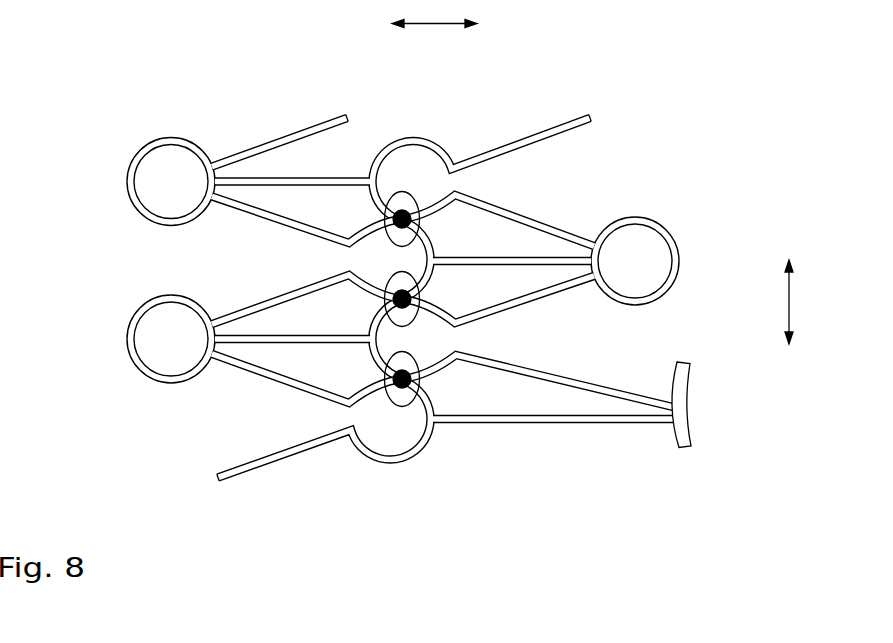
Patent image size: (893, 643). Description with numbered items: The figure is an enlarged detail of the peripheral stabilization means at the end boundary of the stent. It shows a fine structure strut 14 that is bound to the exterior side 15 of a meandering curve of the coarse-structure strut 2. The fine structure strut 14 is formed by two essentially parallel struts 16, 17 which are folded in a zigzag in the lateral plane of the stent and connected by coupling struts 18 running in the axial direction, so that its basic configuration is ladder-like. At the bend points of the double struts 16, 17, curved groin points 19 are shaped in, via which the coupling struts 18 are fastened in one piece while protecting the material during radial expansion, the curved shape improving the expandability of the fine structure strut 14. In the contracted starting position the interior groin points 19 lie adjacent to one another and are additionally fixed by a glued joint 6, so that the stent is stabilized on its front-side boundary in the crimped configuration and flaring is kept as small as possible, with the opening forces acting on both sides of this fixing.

The strut 2 is at (685, 448).
The glued joint 6 is at (402, 390).
The fine structure strut 14 is at (431, 124).
The exterior side 15 is at (669, 428).
The strut 16 is at (519, 141).
The strut 17 is at (277, 141).
The coupling strut 18 is at (352, 179).
The curved groin point 19 is at (174, 138).